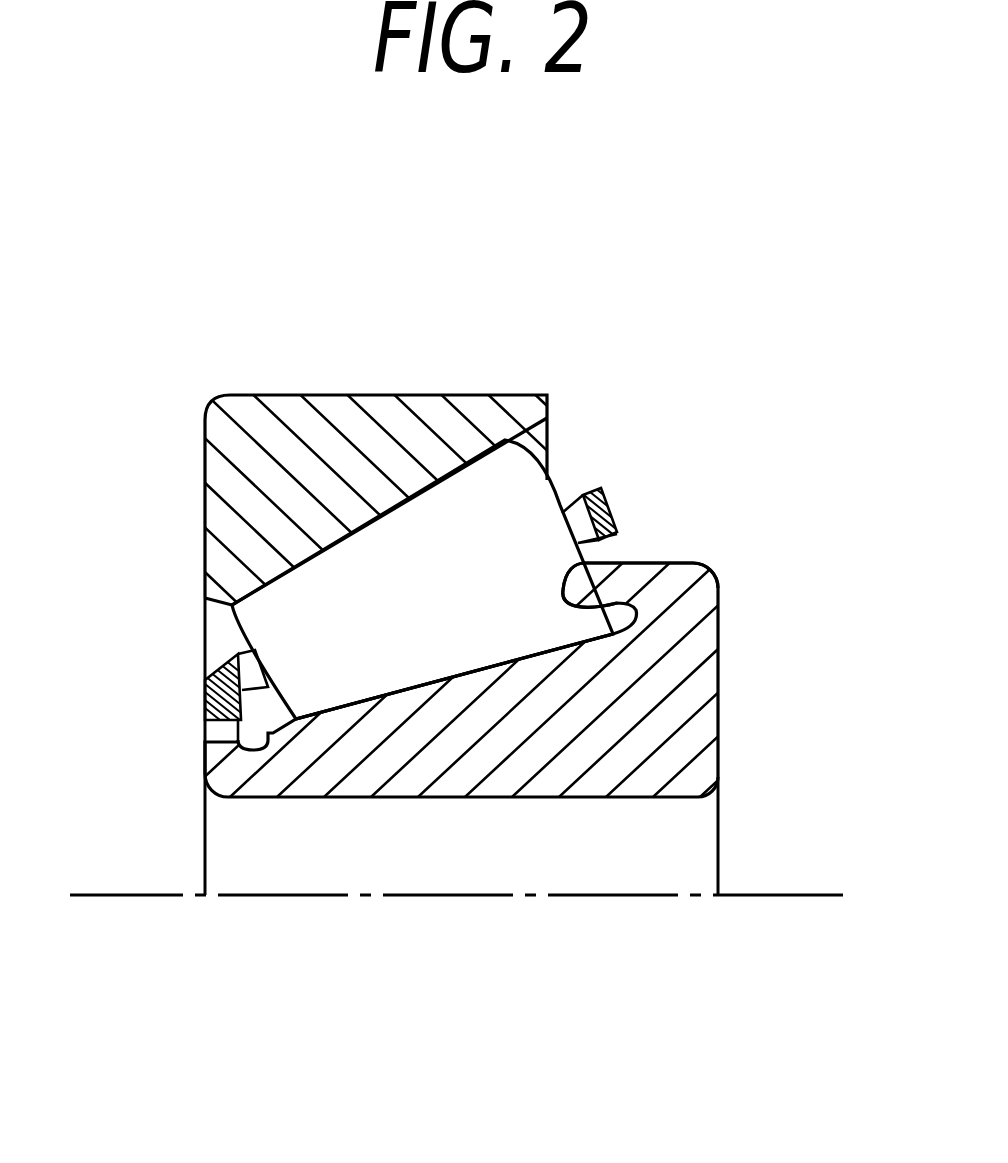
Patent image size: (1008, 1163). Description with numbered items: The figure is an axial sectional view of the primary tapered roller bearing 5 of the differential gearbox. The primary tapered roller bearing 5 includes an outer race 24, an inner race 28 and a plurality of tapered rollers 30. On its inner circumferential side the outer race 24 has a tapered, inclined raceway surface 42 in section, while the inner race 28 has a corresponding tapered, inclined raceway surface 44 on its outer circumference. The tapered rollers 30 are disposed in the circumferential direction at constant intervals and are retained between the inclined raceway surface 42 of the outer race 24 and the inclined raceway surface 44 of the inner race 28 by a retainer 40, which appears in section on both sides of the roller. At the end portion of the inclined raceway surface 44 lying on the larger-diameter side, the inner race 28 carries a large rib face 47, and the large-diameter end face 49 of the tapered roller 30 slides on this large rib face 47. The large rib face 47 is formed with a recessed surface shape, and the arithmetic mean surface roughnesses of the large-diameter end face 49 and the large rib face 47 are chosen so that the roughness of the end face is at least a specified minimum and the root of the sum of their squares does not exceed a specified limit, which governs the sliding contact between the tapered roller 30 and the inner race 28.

The primary tapered roller bearing 5 is at (504, 664).
The outer race 24 is at (416, 442).
The inner race 28 is at (504, 774).
The tapered roller 30 is at (368, 550).
The retainer 40 is at (207, 692).
The inclined raceway surface 42 is at (445, 488).
The inclined raceway surface 44 is at (398, 684).
The large rib face 47 is at (613, 553).
The large-diameter end face 49 is at (718, 585).